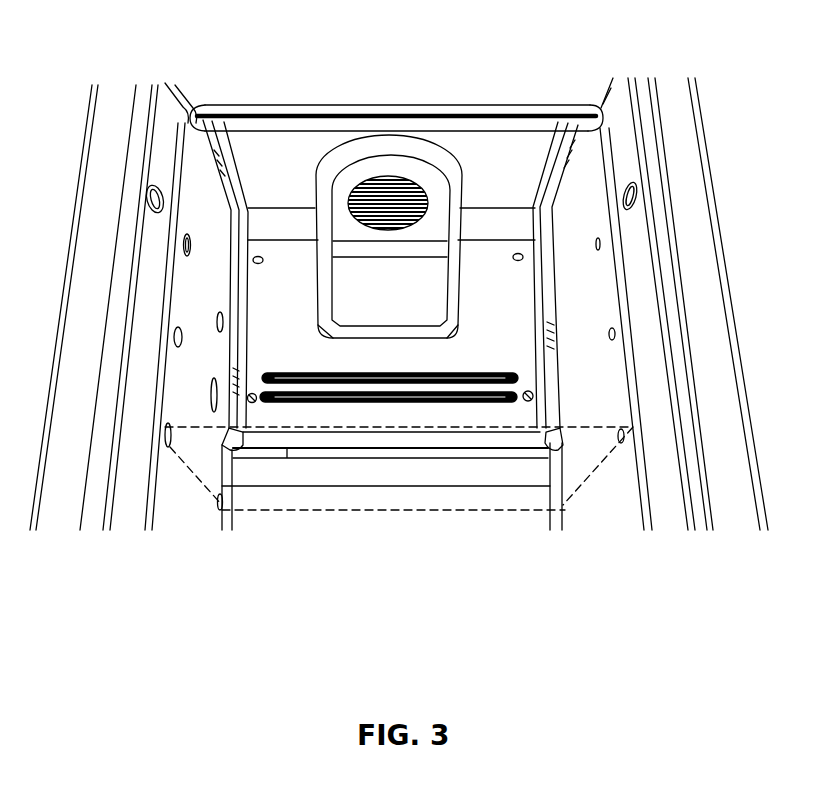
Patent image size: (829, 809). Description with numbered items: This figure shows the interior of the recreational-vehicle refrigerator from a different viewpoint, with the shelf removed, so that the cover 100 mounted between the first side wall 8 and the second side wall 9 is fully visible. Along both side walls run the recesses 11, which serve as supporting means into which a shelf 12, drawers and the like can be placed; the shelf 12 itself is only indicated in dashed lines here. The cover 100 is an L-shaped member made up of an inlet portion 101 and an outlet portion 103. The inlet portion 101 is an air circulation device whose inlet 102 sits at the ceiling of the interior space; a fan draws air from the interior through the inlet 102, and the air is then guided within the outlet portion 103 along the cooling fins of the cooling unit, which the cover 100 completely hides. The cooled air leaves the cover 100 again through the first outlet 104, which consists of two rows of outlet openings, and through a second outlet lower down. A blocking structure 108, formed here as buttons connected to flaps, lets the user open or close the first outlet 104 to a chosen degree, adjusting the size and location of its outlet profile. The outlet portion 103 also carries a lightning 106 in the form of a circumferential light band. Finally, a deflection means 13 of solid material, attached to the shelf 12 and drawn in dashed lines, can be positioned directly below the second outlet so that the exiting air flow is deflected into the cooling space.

The first side wall 8 is at (605, 273).
The second side wall 9 is at (182, 291).
The recesses 11 is at (178, 348).
The shelf 12 is at (190, 470).
The deflection means 13 is at (322, 500).
The cover 100 is at (486, 152).
The inlet portion 101 is at (347, 272).
The inlet 102 is at (392, 193).
The outlet portion 103 is at (537, 153).
The first outlet 104 is at (478, 373).
The lightning 106 is at (350, 157).
The blocking structure 108 is at (252, 393).